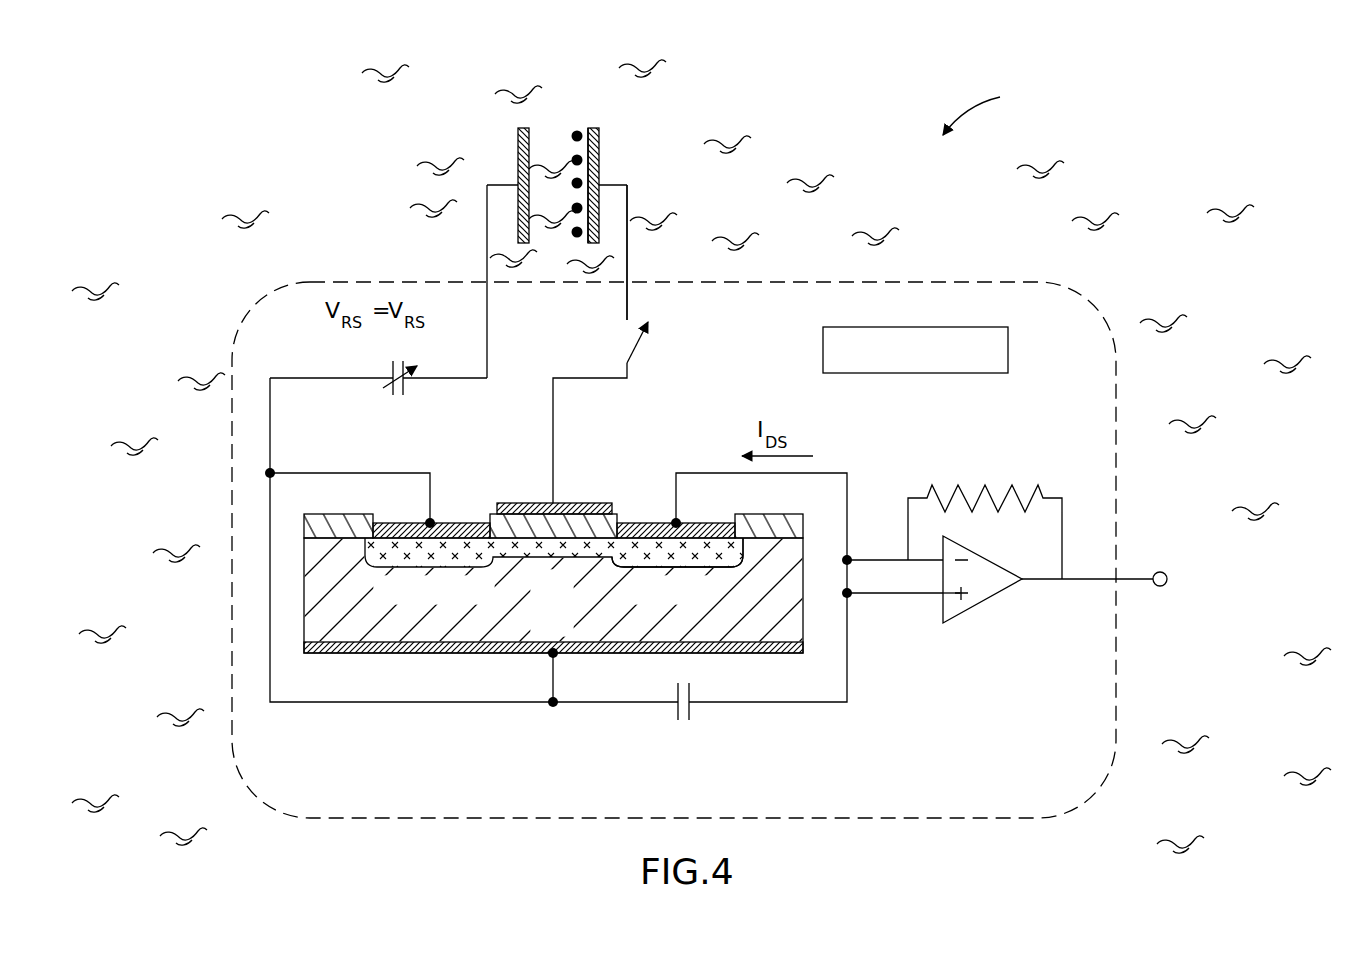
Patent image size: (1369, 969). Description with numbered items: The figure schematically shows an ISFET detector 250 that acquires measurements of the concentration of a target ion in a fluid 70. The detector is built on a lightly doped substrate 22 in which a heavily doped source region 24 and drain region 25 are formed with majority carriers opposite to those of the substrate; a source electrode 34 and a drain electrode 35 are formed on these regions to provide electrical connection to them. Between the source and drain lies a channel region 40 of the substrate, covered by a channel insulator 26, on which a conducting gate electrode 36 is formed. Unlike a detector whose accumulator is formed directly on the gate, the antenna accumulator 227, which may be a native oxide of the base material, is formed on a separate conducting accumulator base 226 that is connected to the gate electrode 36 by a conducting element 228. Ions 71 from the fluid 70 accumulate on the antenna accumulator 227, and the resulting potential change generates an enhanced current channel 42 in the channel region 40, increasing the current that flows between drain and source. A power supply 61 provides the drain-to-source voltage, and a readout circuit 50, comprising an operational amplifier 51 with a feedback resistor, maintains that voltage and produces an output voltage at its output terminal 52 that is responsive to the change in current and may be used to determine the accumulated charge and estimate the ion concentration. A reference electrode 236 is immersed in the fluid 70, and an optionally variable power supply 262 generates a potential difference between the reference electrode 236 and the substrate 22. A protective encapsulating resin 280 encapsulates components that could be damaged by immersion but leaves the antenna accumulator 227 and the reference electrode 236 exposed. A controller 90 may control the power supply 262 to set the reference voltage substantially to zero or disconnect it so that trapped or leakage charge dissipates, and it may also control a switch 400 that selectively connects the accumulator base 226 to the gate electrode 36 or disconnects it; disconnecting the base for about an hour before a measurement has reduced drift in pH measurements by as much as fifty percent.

The substrate 22 is at (568, 597).
The source region 24 is at (387, 555).
The drain region 25 is at (632, 553).
The channel insulator 26 is at (513, 503).
The source electrode 34 is at (463, 523).
The drain electrode 35 is at (650, 523).
The gate electrode 36 is at (560, 537).
The channel region 40 is at (527, 568).
The enhanced current channel 42 is at (580, 558).
The readout circuit 50 is at (1004, 624).
The operational amplifier 51 is at (973, 592).
The output terminal 52 is at (1160, 572).
The power supply 61 is at (689, 710).
The fluid 70 is at (453, 203).
The analyte particles 71 is at (577, 130).
The controller 90 is at (823, 347).
The accumulator base 226 is at (600, 148).
The antenna accumulator 227 is at (592, 128).
The conducting element 228 is at (627, 300).
The reference electrode 236 is at (518, 148).
The ISFET detector 250 is at (996, 109).
The power supply 262 is at (385, 377).
The protective encapsulating resin 280 is at (937, 282).
The switch 400 is at (634, 350).